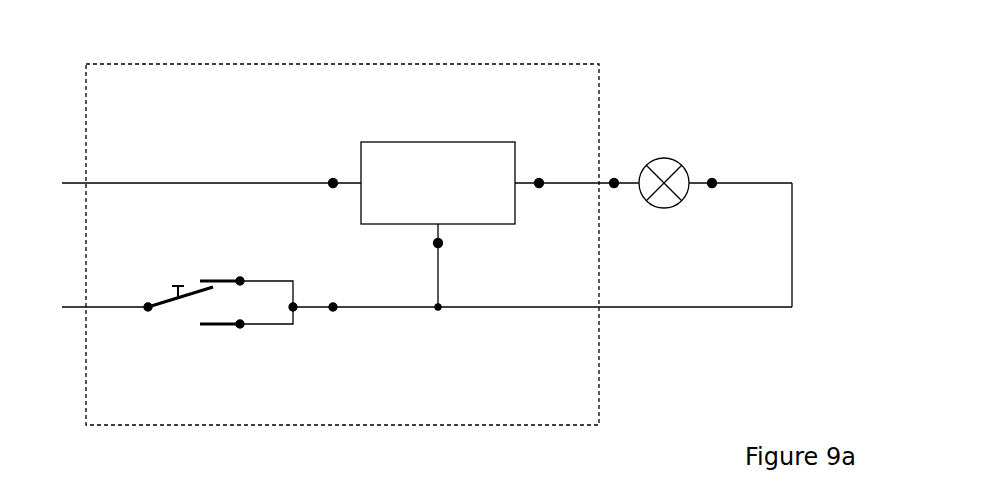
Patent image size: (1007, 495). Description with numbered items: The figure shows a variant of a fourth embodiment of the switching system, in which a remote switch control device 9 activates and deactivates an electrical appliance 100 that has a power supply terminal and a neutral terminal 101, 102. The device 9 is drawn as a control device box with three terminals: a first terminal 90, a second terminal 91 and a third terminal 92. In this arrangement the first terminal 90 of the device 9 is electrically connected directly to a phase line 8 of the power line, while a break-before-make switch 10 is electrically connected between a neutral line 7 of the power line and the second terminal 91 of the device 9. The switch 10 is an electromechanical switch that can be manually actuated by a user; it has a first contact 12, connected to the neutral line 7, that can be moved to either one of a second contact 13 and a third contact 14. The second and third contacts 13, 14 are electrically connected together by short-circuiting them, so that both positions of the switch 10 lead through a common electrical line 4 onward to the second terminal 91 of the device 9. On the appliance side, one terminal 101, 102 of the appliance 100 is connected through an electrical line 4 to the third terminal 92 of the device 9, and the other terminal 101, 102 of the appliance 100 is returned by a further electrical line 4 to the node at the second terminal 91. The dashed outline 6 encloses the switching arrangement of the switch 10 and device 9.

The switching unit 6 is at (567, 50).
The phase line 8 is at (68, 158).
The neutral line 7 is at (68, 284).
The first contact 12 is at (139, 284).
The break-before-make switch 10 is at (217, 254).
The second contact 13 is at (252, 258).
The third contact 14 is at (247, 351).
The electrical line 4 is at (293, 258).
The first terminal 90 is at (324, 164).
The remote switch control device 9 is at (495, 134).
The third terminal 92 is at (547, 162).
The second terminal 91 is at (454, 241).
The electrical appliance 100 is at (664, 131).
The power supply terminal 101 is at (620, 202).
The neutral terminal 102 is at (716, 204).